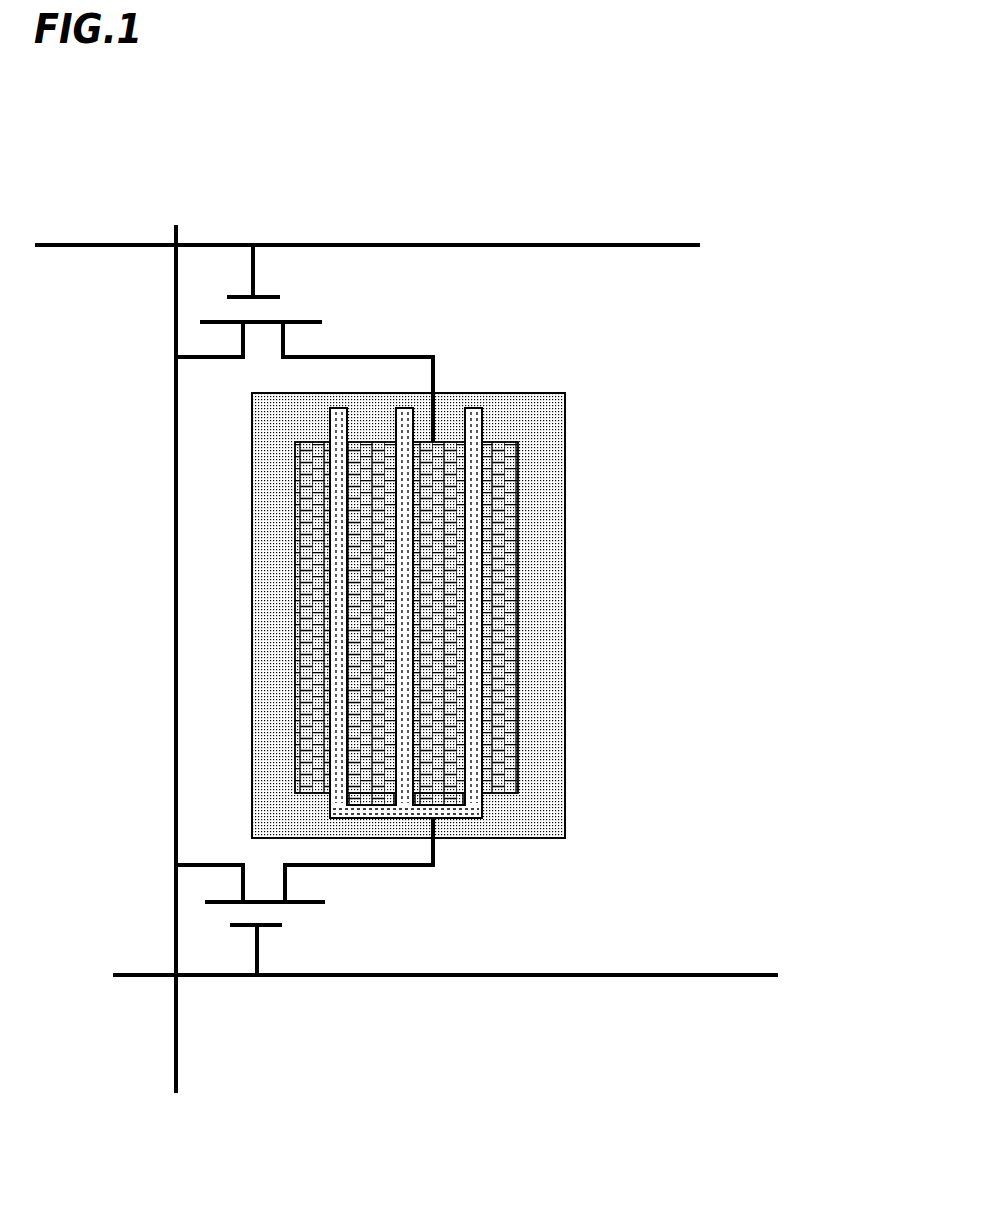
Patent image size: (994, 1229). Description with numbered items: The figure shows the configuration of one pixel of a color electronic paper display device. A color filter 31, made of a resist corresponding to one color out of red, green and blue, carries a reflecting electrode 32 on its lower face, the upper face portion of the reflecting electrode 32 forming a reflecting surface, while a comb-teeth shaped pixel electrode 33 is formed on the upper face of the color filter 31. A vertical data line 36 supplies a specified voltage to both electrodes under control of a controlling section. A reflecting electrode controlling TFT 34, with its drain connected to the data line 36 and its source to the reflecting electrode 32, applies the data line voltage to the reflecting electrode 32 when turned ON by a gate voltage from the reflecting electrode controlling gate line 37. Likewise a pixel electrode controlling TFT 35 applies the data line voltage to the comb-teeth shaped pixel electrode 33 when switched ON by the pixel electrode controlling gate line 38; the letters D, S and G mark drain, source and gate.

The color filter 31 is at (522, 838).
The reflecting electrode 32 is at (520, 600).
The comb-teeth shaped pixel electrode 33 is at (472, 394).
The reflecting electrode controlling TFT 34 is at (283, 311).
The pixel electrode controlling TFT 35 is at (287, 917).
The data line 36 is at (178, 1010).
The reflecting electrode controlling gate line 37 is at (383, 245).
The pixel electrode controlling gate line 38 is at (473, 978).